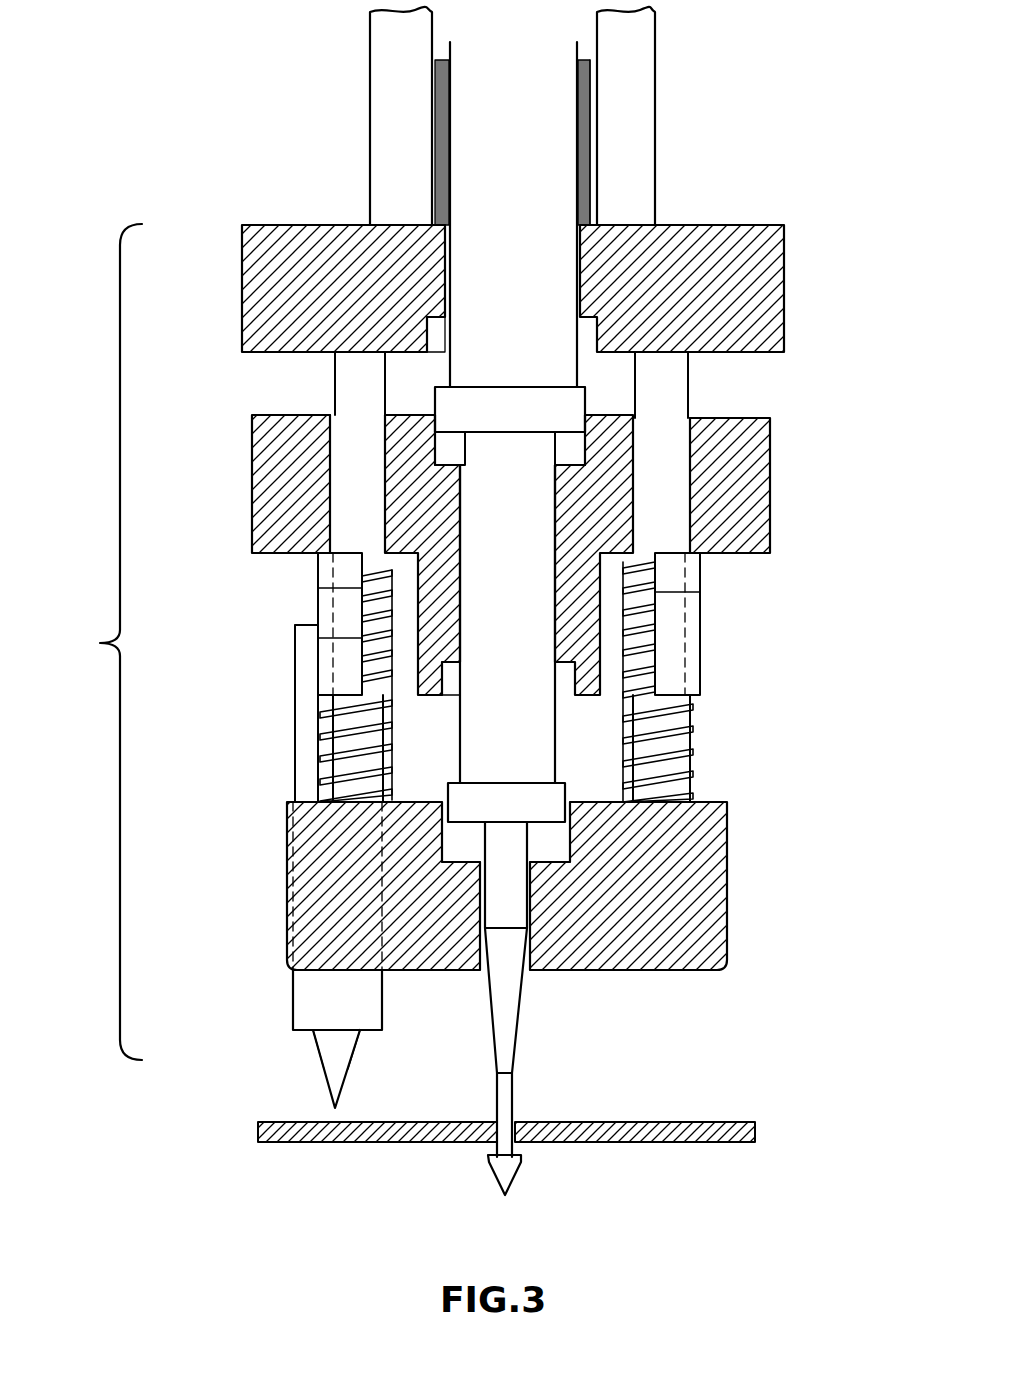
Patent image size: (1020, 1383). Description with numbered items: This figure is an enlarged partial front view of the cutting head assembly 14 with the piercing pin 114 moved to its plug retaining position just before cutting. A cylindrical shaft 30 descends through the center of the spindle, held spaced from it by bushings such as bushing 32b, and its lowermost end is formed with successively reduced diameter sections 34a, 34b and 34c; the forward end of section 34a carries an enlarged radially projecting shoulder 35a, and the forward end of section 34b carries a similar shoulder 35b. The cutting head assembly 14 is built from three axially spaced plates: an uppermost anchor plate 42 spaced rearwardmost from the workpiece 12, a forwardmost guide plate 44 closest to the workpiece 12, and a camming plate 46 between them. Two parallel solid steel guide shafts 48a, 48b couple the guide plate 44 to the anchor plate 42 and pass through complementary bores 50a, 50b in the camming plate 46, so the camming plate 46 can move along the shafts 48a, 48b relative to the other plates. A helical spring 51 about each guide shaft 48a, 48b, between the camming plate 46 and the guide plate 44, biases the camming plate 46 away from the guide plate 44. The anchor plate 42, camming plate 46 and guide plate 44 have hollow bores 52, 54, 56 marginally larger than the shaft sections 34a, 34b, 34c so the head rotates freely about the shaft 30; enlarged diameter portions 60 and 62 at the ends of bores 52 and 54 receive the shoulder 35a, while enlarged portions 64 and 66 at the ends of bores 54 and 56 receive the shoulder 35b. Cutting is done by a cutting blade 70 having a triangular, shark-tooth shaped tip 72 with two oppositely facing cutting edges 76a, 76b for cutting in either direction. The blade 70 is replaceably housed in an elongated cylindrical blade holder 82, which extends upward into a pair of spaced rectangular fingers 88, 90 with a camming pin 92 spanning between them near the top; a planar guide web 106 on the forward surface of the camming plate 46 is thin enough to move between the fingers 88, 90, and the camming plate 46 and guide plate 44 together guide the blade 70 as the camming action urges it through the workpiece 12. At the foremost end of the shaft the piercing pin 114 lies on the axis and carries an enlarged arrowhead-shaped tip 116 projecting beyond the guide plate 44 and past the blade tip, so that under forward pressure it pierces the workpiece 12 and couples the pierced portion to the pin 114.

The workpiece 12 is at (712, 1145).
The cutting head assembly 14 is at (92, 642).
The cylindrical shaft 30 is at (450, 40).
The bushing 32b is at (587, 112).
The shaft section 34a is at (542, 197).
The shaft section 34b is at (542, 603).
The shaft section 34c is at (505, 948).
The radially projecting shoulder 35a is at (510, 397).
The radially projecting shoulder 35b is at (518, 795).
The anchor plate 42 is at (773, 248).
The guide plate 44 is at (727, 950).
The camming plate 46 is at (265, 530).
The guide shaft 48a is at (335, 400).
The guide shaft 48b is at (673, 378).
The bore 50a is at (330, 463).
The bore 50b is at (688, 462).
The helical spring 51 is at (687, 795).
The hollow bore 52 is at (622, 224).
The hollow bore 54 is at (447, 500).
The hollow bore 56 is at (530, 958).
The enlarged diameter portion 60 is at (437, 328).
The enlarged diameter portion 62 is at (447, 445).
The enlarged diameter portion 64 is at (448, 697).
The enlarged diameter portion 66 is at (572, 833).
The cutting blade 70 is at (335, 1055).
The tip 72 is at (337, 1073).
The cutting edge 76a is at (355, 1050).
The cutting edge 76b is at (337, 1075).
The blade holder 82 is at (320, 752).
The finger 88 is at (297, 675).
The finger 90 is at (322, 688).
The camming pin 92 is at (318, 645).
The guide web 106 is at (318, 558).
The piercing pin 114 is at (512, 1082).
The arrowhead-shaped tip 116 is at (520, 1170).